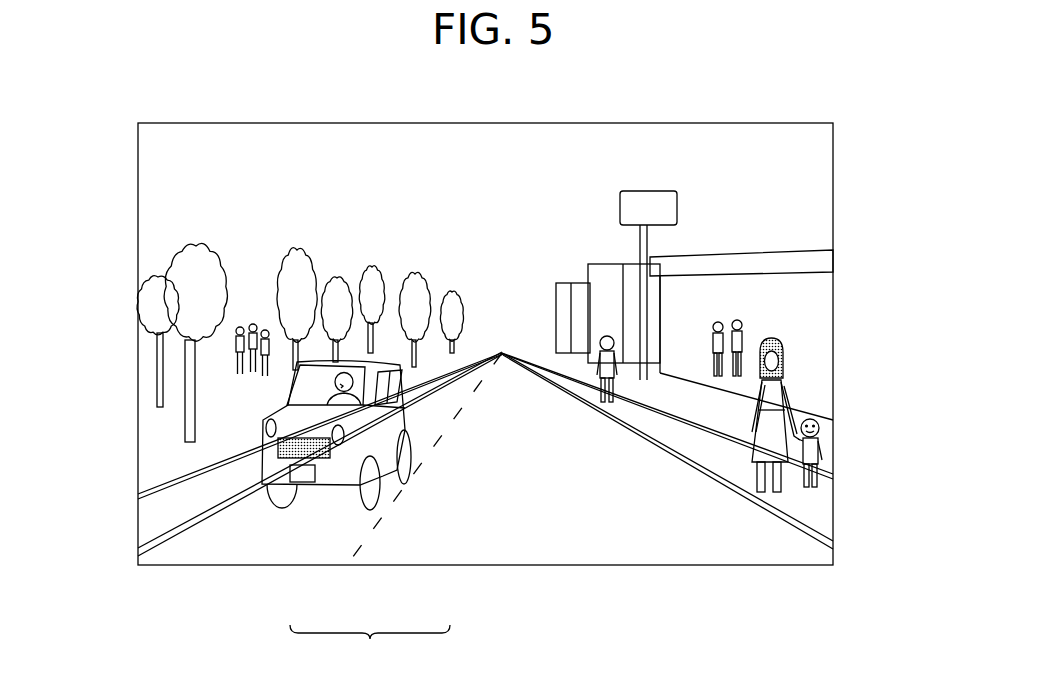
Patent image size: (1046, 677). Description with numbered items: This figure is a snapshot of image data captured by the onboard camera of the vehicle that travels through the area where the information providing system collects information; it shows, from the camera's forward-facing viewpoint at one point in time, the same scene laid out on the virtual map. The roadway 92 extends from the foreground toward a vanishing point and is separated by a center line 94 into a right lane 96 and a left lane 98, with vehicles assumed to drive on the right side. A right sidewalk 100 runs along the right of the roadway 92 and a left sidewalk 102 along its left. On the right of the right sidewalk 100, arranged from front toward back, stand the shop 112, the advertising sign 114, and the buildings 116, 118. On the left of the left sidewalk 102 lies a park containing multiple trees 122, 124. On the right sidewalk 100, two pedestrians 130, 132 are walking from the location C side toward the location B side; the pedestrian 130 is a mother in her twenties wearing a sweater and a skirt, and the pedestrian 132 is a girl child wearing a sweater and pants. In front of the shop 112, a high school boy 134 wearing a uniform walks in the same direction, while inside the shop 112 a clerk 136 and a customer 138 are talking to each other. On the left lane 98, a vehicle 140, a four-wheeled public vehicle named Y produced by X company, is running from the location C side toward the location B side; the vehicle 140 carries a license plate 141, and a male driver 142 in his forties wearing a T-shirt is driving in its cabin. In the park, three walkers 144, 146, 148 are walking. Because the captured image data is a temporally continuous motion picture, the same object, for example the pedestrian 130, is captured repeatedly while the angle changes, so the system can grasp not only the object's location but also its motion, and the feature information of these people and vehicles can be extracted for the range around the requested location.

The roadway 92 is at (370, 646).
The center line 94 is at (377, 545).
The right lane 96 is at (434, 552).
The left lane 98 is at (311, 552).
The right sidewalk 100 is at (827, 518).
The left sidewalk 102 is at (152, 522).
The shop 112 is at (705, 255).
The advertising sign 114 is at (657, 191).
The building 116 is at (610, 263).
The building 118 is at (568, 283).
The tree 122 is at (187, 248).
The tree 124 is at (297, 250).
The pedestrian 130 is at (779, 349).
The pedestrian 132 is at (820, 427).
The high school boy 134 is at (613, 340).
The clerk 136 is at (743, 327).
The customer 138 is at (724, 324).
The vehicle 140 is at (325, 487).
The license plate 141 is at (303, 483).
The driver 142 is at (333, 389).
The walker 144 is at (240, 326).
The walker 146 is at (253, 323).
The walker 148 is at (265, 329).